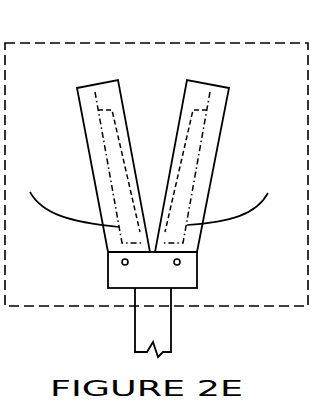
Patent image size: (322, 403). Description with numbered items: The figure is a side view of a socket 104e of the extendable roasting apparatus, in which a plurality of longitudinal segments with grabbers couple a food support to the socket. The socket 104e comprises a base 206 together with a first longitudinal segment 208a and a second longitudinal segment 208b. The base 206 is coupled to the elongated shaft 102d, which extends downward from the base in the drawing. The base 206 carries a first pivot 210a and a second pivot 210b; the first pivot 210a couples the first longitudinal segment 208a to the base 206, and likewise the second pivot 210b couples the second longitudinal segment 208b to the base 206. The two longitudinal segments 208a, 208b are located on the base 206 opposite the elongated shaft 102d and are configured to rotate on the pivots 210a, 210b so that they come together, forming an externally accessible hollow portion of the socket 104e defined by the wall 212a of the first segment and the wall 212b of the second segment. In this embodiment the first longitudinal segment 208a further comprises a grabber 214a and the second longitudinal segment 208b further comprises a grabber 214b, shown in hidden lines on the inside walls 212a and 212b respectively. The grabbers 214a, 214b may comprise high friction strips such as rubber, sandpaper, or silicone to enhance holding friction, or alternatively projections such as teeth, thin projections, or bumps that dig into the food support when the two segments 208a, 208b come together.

The socket 104e is at (122, 43).
The grabber 214a is at (118, 122).
The grabber 214b is at (192, 122).
The first longitudinal segment 208a is at (91, 167).
The second longitudinal segment 208b is at (215, 167).
The wall 212a is at (62, 197).
The wall 212b is at (243, 196).
The first pivot 210a is at (122, 262).
The second pivot 210b is at (180, 262).
The base 206 is at (108, 283).
The elongated shaft 102d is at (171, 322).